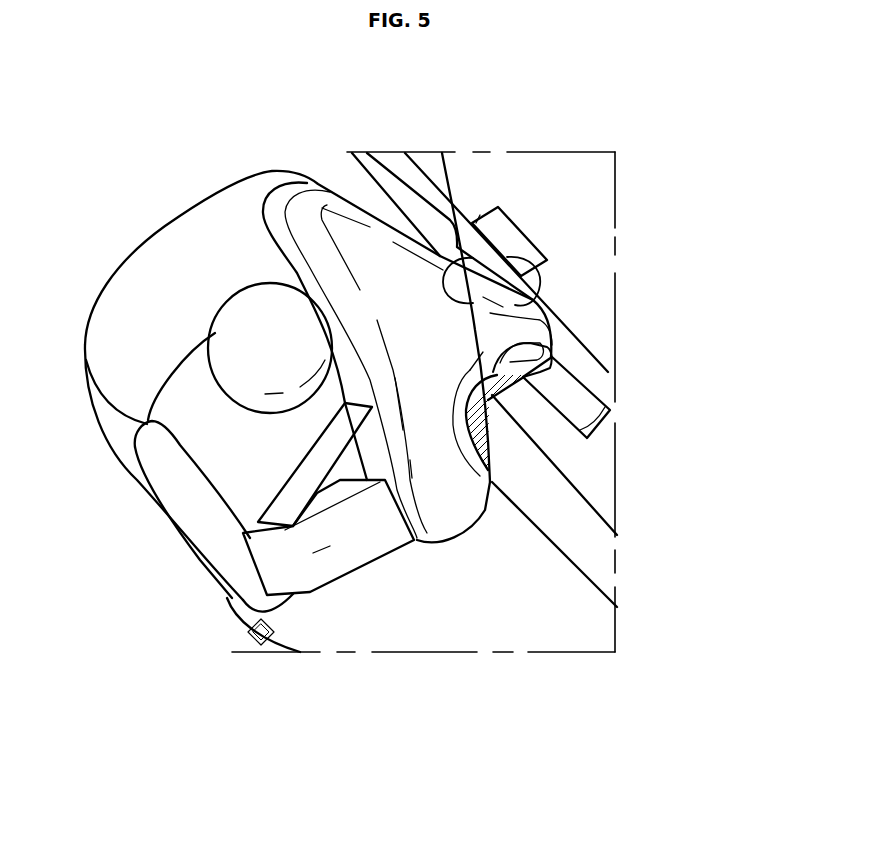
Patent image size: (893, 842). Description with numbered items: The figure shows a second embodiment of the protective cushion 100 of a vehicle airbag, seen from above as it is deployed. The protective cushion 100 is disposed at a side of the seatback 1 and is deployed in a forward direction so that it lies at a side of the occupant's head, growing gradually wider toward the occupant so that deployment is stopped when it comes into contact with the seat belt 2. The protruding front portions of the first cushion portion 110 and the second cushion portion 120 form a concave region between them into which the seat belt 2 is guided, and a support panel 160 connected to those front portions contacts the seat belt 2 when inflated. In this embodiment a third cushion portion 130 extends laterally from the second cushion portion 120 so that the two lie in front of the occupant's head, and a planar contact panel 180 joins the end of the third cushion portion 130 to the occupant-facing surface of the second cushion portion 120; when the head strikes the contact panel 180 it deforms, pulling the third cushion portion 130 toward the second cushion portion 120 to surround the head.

The seatback 1 is at (183, 235).
The seat belt 2 is at (475, 258).
The protective cushion 100 is at (383, 219).
The first cushion portion 110 is at (457, 333).
The second cushion portion 120 is at (460, 503).
The third cushion portion 130 is at (327, 547).
The support panel 160 is at (505, 343).
The contact panel 180 is at (300, 473).